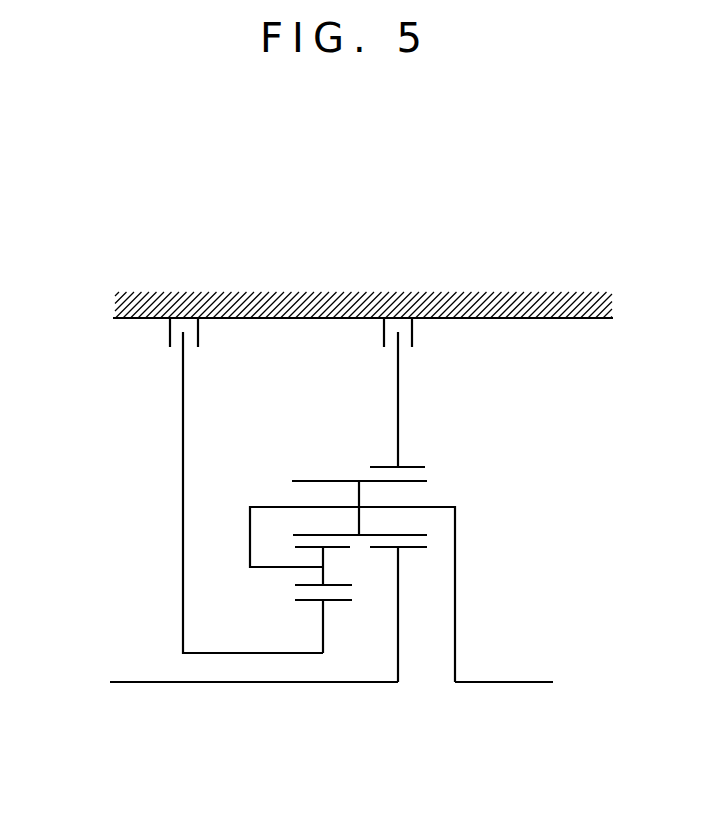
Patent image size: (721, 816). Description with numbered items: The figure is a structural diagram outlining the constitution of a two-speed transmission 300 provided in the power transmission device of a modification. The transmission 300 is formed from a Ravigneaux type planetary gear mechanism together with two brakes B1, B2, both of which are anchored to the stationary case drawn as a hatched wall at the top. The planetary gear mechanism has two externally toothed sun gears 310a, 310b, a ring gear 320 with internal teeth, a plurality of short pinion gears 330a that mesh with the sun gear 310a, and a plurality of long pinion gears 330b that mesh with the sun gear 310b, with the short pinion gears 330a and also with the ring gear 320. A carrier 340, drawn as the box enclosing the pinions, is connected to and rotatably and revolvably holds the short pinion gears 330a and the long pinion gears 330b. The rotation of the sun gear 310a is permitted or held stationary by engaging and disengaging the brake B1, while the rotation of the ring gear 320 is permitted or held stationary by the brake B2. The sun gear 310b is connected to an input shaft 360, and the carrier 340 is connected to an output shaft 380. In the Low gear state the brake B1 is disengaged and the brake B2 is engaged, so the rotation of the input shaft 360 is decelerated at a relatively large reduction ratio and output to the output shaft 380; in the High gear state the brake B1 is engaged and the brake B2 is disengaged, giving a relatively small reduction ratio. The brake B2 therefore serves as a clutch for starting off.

The transmission 300 is at (94, 381).
The brake B1 is at (170, 330).
The brake B2 is at (384, 328).
The ring gear 320 is at (412, 466).
The long pinion gears 330b is at (362, 498).
The sun gear 310b is at (410, 548).
The carrier 340 is at (250, 520).
The short pinion gears 330a is at (322, 573).
The sun gear 310a is at (307, 603).
The input shaft 360 is at (180, 684).
The output shaft 380 is at (475, 683).